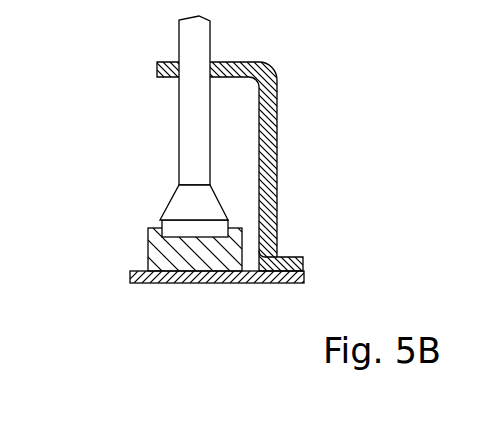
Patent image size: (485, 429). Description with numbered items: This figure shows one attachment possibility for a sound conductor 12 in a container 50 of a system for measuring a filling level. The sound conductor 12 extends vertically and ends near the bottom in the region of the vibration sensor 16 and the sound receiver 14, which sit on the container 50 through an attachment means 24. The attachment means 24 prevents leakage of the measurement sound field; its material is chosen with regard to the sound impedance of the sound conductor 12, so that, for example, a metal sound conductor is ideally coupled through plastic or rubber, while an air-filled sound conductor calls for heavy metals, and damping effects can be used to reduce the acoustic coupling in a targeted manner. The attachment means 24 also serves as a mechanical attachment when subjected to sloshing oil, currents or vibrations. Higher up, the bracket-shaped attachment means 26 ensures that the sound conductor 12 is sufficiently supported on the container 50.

The sound conductor 12 is at (197, 32).
The attachment means 26 is at (157, 68).
The vibration sensor 16 is at (184, 201).
The sound receiver 14 is at (157, 223).
The attachment means 24 is at (167, 255).
The container 50 is at (153, 275).